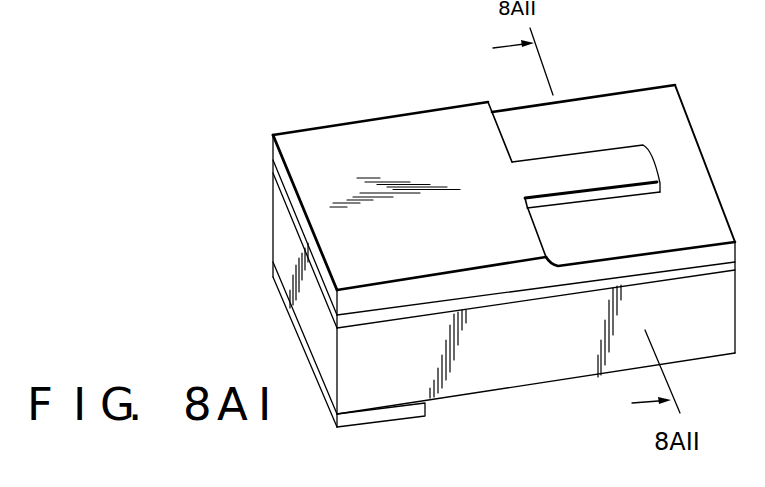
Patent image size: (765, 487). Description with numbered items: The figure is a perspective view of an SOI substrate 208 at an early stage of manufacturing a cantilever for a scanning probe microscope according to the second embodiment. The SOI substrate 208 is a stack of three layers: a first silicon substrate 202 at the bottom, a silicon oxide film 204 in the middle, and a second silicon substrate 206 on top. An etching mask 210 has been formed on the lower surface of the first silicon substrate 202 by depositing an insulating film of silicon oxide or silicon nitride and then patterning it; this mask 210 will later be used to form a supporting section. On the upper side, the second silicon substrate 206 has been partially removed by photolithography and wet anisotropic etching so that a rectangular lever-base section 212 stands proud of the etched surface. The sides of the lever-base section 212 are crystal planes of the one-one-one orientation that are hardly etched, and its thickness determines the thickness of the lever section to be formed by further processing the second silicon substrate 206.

The first silicon substrate 202 is at (277, 232).
The silicon oxide film 204 is at (277, 173).
The second silicon substrate 206 is at (312, 140).
The SOI substrate 208 is at (377, 110).
The etching mask 210 is at (277, 297).
The lever-base section 212 is at (623, 162).